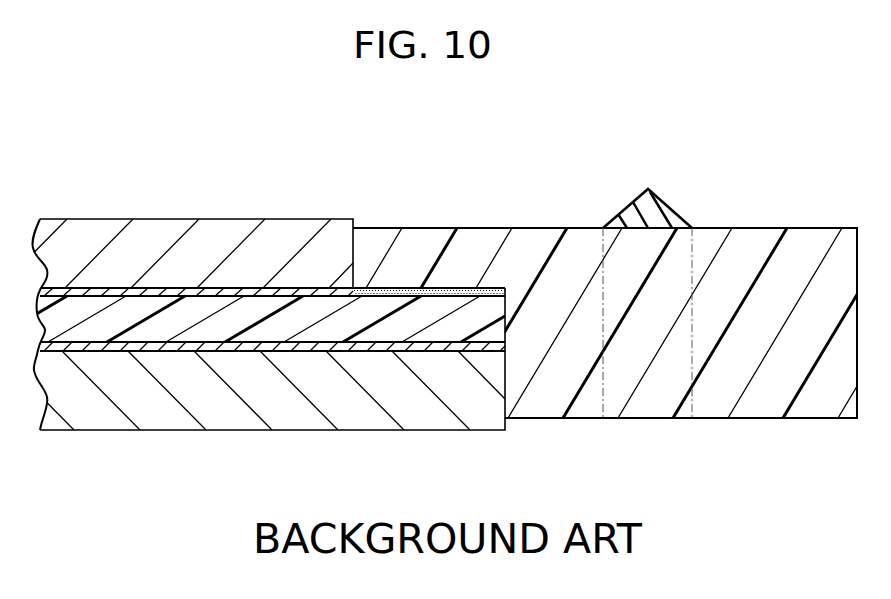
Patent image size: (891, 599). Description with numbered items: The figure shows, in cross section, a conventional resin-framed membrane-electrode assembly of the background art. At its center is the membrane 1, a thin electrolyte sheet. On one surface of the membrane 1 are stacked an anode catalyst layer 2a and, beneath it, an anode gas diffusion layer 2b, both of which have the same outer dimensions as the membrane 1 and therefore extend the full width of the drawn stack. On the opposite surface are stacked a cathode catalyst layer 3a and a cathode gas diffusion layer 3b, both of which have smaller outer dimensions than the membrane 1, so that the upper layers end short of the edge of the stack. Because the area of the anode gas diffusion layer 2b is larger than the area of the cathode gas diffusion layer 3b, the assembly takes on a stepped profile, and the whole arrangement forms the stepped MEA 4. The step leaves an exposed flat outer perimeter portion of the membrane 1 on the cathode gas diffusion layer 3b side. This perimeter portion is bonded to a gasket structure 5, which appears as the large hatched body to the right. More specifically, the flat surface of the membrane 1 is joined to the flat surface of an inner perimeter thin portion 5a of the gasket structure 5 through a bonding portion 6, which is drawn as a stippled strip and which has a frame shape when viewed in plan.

The membrane 1 is at (98, 330).
The anode catalyst layer 2a is at (182, 347).
The anode gas diffusion layer 2b is at (237, 423).
The cathode catalyst layer 3a is at (122, 292).
The cathode gas diffusion layer 3b is at (168, 228).
The stepped MEA 4 is at (243, 212).
The gasket structure 5 is at (807, 236).
The inner perimeter thin portion 5a is at (413, 243).
The bonding portion 6 is at (463, 291).